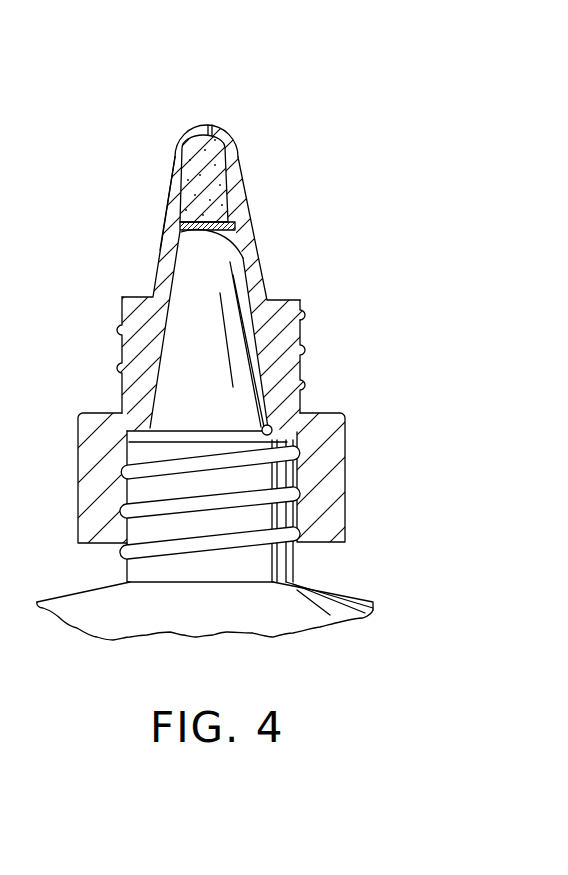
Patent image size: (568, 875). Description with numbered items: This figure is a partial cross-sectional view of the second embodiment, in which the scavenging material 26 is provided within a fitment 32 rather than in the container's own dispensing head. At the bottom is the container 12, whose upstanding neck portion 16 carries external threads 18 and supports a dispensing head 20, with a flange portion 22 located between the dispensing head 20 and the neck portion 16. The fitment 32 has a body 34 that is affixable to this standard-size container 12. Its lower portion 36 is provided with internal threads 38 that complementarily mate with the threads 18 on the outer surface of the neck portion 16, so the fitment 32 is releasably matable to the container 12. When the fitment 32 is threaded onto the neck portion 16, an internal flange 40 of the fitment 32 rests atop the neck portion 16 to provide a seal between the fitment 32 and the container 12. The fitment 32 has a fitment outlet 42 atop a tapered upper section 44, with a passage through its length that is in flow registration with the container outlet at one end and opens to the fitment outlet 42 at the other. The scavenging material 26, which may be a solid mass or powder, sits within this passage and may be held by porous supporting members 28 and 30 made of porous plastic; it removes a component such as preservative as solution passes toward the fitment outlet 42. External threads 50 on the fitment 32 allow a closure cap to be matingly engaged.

The container 12 is at (352, 577).
The neck portion 16 is at (128, 446).
The external threads 18 is at (262, 510).
The dispensing head 20 is at (240, 273).
The flange portion 22 is at (136, 426).
The scavenging material 26 is at (222, 163).
The porous supporting member 28 is at (220, 127).
The porous supporting member 30 is at (230, 222).
The fitment 32 is at (140, 256).
The body 34 is at (304, 367).
The lower portion 36 is at (336, 433).
The internal threads 38 is at (125, 508).
The internal flange 40 is at (272, 425).
The fitment outlet 42 is at (210, 124).
The tapered upper section 44 is at (172, 182).
The external threads 50 is at (304, 316).